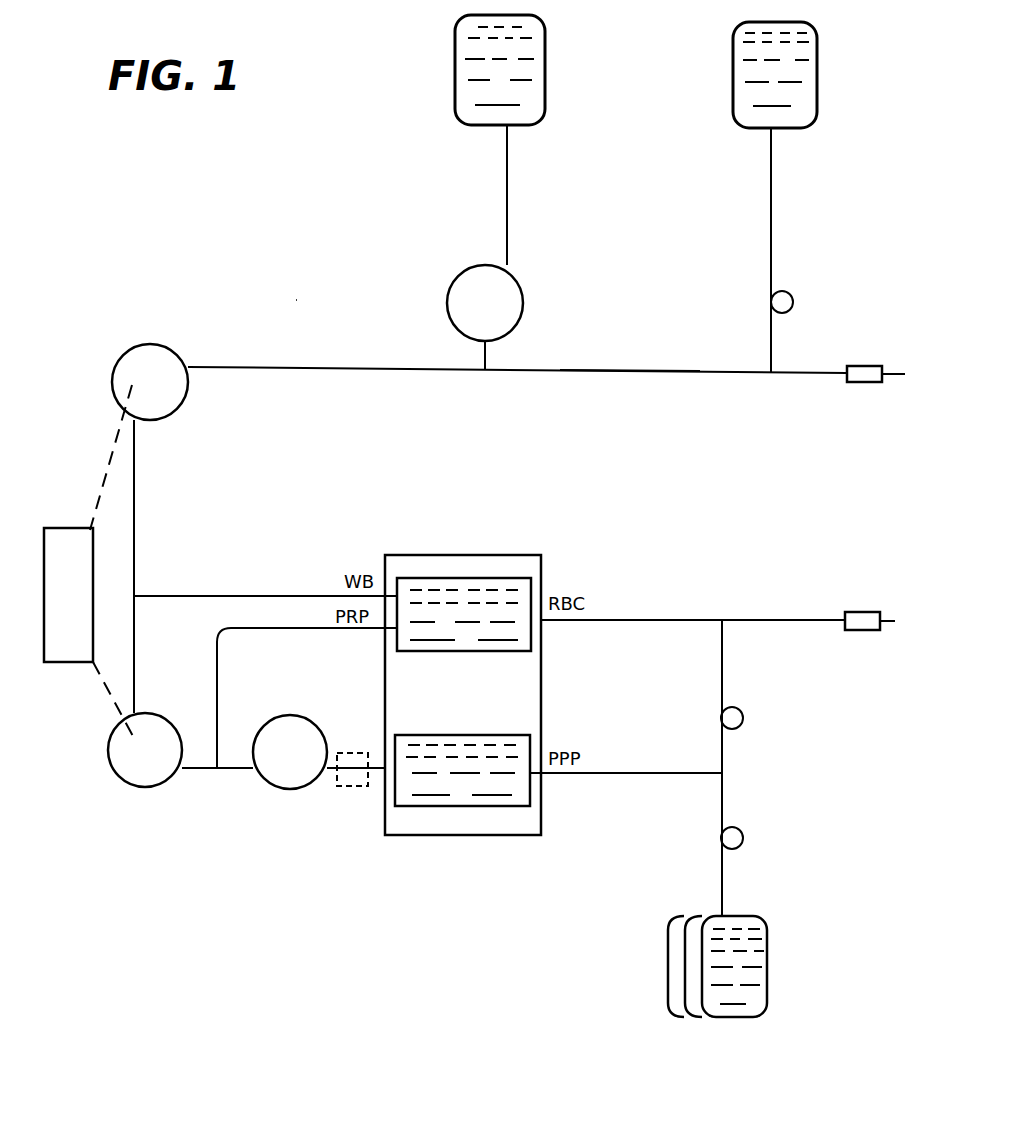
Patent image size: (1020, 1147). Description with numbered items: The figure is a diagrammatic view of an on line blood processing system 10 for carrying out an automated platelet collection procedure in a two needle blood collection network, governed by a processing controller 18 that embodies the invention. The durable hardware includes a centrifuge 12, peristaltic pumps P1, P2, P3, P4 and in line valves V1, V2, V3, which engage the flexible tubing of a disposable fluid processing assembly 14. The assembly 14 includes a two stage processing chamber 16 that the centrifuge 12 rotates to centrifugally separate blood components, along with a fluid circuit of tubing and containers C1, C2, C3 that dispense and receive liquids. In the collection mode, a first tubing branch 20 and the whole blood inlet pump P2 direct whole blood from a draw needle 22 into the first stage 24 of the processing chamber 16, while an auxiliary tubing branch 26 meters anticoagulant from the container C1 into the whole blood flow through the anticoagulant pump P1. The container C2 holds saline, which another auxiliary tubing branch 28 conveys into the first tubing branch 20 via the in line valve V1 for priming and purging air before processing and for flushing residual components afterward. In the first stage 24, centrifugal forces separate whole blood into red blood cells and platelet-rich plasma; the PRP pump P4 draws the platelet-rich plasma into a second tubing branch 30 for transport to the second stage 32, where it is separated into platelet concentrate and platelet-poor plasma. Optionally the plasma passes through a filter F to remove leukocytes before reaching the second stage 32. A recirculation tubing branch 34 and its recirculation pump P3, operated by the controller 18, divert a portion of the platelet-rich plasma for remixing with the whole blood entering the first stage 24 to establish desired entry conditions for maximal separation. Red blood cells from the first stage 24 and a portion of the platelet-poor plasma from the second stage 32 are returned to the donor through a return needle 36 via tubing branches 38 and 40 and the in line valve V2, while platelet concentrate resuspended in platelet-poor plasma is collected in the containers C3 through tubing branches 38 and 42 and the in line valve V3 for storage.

The blood processing system 10 is at (298, 302).
The centrifuge 12 is at (526, 555).
The disposable fluid processing assembly 14 is at (366, 393).
The two stage processing chamber 16 is at (482, 722).
The processing controller 18 is at (64, 542).
The first tubing branch 20 is at (625, 380).
The draw needle 22 is at (860, 366).
The first stage 24 is at (462, 603).
The auxiliary tubing branch 26 is at (507, 205).
The auxiliary tubing branch 28 is at (771, 207).
The second tubing branch 30 is at (217, 690).
The second stage 32 is at (472, 780).
The recirculation tubing branch 34 is at (134, 668).
The return needle 36 is at (862, 615).
The tubing branch 38 is at (672, 780).
The tubing branch 40 is at (790, 620).
The tubing branch 42 is at (722, 880).
The anticoagulant container C1 is at (535, 70).
The saline container C2 is at (808, 72).
The collection containers C3 is at (730, 1010).
The anticoagulant pump P1 is at (510, 303).
The whole blood inlet pump P2 is at (155, 368).
The recirculation pump P3 is at (145, 770).
The PRP pump P4 is at (290, 772).
The in line valve V1 is at (788, 300).
The in line valve V2 is at (738, 716).
The in line valve V3 is at (738, 836).
The filter F is at (345, 786).